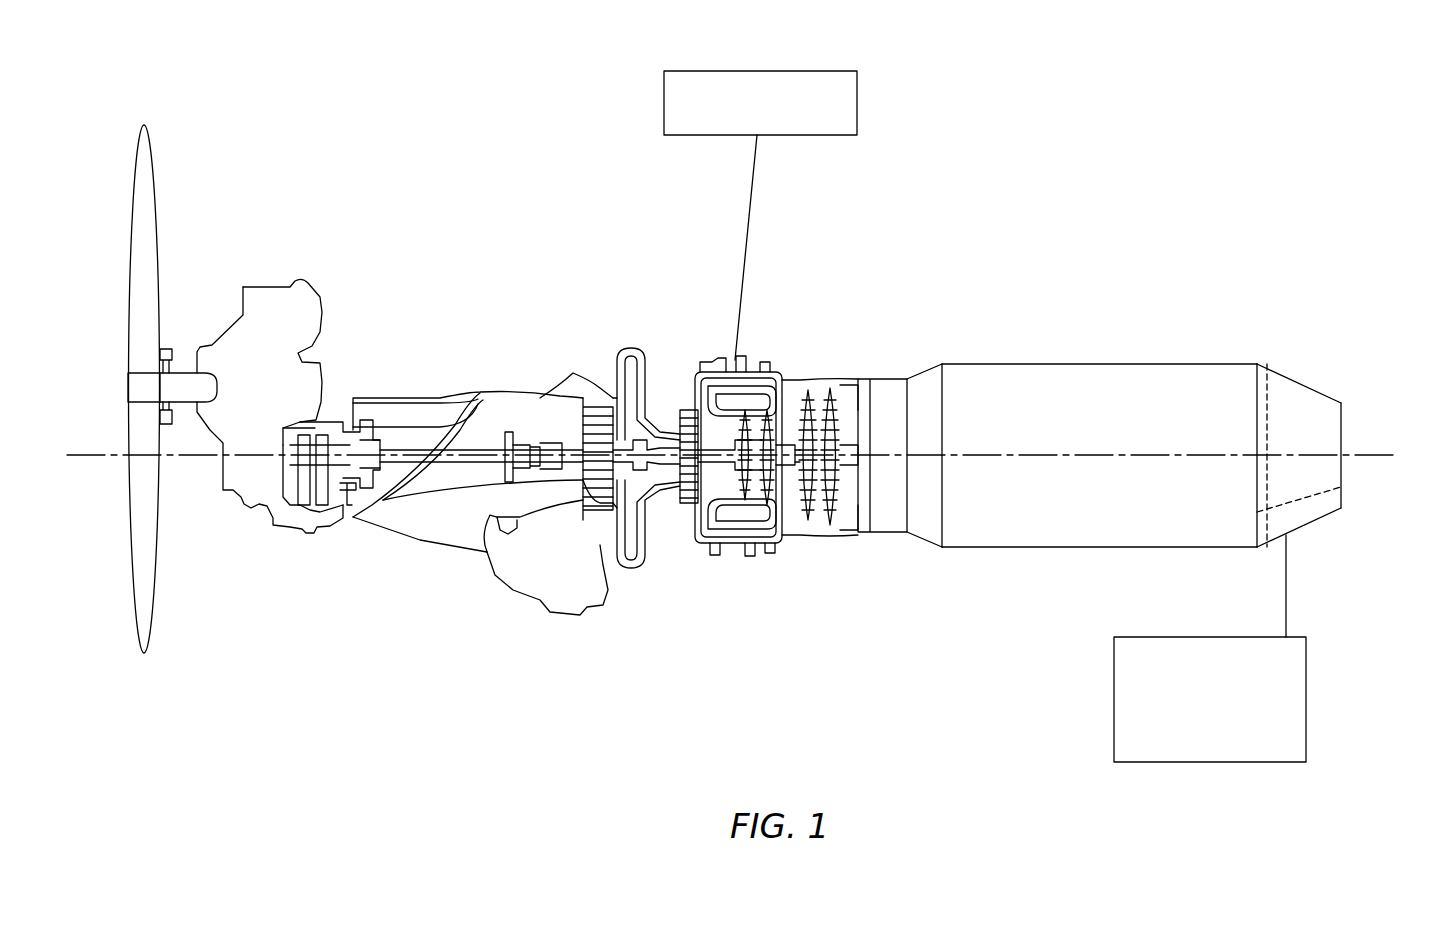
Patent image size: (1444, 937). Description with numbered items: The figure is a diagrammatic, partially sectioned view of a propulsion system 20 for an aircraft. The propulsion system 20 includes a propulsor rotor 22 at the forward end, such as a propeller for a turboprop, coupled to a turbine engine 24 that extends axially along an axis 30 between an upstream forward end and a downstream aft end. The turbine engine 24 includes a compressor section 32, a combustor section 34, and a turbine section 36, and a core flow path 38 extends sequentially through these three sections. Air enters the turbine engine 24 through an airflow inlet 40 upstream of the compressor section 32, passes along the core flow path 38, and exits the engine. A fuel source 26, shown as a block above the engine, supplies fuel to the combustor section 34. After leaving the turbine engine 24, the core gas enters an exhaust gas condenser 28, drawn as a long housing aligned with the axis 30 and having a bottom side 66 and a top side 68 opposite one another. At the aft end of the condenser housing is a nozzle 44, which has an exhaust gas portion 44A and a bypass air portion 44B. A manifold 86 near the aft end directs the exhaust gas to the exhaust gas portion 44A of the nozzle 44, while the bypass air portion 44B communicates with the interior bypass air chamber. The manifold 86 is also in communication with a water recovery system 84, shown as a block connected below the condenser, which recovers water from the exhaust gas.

The propulsion system 20 is at (1025, 172).
The propulsor rotor 22 is at (198, 130).
The turbine engine 24 is at (588, 222).
The fuel source 26 is at (773, 68).
The exhaust gas condenser 28 is at (1107, 325).
The axis 30 is at (1375, 455).
The compressor section 32 is at (653, 345).
The combustor section 34 is at (762, 350).
The turbine section 36 is at (808, 385).
The core flow path 38 is at (848, 522).
The airflow inlet 40 is at (418, 540).
The nozzle 44 is at (1331, 417).
The exhaust gas portion of the nozzle 44A is at (1312, 515).
The bypass air portion of the nozzle 44B is at (1312, 405).
The bottom side 66 is at (1099, 459).
The top side 68 is at (1157, 363).
The water recovery system 84 is at (1306, 685).
The manifold 86 is at (1267, 363).